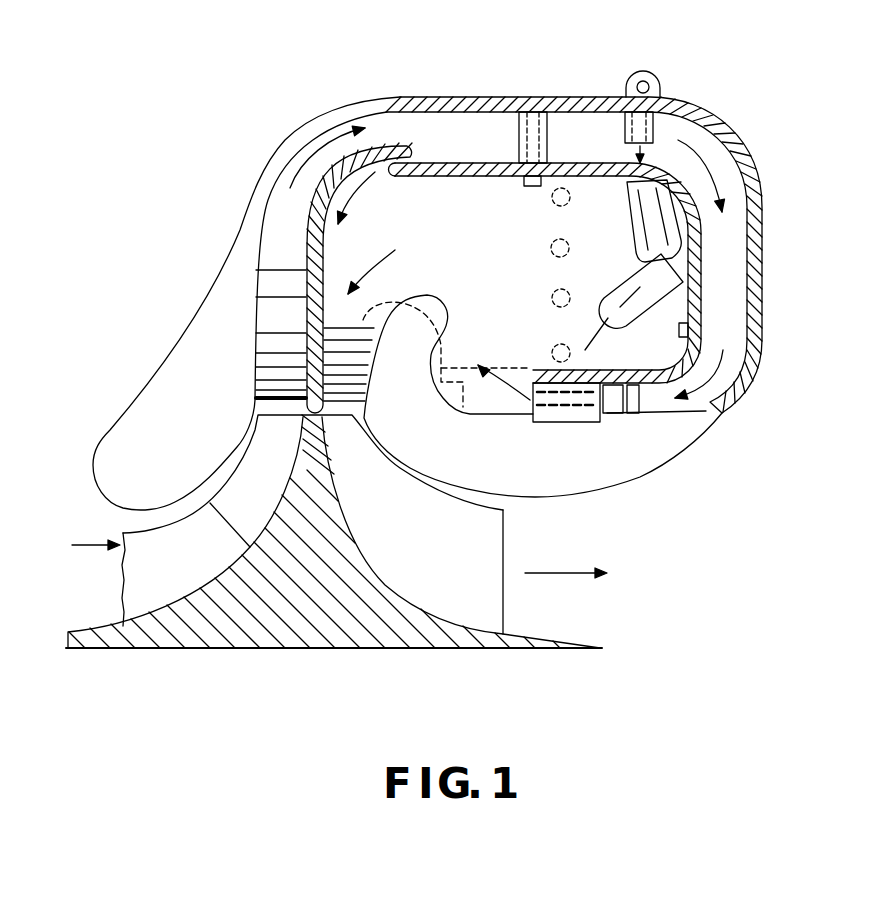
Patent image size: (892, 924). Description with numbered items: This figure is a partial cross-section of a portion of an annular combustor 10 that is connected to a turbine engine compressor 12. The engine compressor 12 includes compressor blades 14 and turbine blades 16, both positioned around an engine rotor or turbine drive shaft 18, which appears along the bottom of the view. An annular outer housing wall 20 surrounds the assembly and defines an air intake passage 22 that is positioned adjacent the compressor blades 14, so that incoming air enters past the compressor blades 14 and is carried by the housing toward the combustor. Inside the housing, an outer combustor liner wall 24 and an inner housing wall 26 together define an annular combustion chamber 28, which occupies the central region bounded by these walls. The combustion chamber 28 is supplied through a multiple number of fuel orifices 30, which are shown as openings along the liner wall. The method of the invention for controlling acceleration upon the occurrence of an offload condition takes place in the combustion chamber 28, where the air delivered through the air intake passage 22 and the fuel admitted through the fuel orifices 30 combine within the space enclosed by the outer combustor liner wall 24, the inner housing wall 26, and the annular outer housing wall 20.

The annular combustor 10 is at (314, 96).
The turbine engine compressor 12 is at (229, 661).
The compressor blades 14 is at (121, 583).
The turbine blades 16 is at (504, 541).
The turbine drive shaft 18 is at (321, 652).
The annular outer housing wall 20 is at (763, 237).
The air intake passage 22 is at (71, 547).
The outer combustor liner wall 24 is at (590, 180).
The inner housing wall 26 is at (330, 250).
The annular combustion chamber 28 is at (518, 292).
The fuel orifices 30 is at (550, 199).